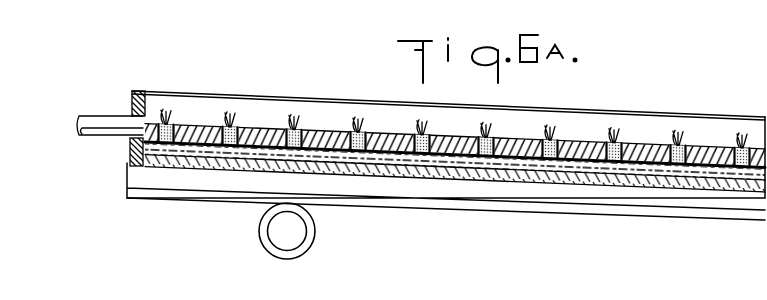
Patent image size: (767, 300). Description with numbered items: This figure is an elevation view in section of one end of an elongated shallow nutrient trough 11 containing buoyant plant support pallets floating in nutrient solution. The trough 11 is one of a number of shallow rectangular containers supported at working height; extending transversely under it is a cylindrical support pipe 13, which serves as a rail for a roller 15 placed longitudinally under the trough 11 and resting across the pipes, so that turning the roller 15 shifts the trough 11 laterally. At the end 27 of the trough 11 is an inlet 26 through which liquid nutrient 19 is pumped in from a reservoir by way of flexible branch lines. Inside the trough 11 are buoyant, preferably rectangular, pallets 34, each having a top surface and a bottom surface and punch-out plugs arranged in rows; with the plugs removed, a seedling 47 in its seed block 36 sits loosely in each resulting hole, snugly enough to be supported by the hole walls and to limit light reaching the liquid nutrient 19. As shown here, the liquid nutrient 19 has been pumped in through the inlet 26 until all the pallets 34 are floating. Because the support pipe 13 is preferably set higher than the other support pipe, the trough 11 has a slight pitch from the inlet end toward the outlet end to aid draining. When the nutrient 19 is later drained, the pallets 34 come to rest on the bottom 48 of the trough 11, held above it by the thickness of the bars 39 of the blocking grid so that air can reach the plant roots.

The trough 11 is at (629, 84).
The support pipe 13 is at (316, 237).
The roller 15 is at (538, 204).
The liquid nutrient 19 is at (193, 150).
The inlet 26 is at (94, 137).
The end of the trough 27 is at (129, 96).
The pallet 34 is at (203, 130).
The seed block 36 is at (242, 124).
The bars of the blocking grid 39 is at (207, 148).
The seedling 47 is at (233, 124).
The bottom of the trough 48 is at (430, 178).